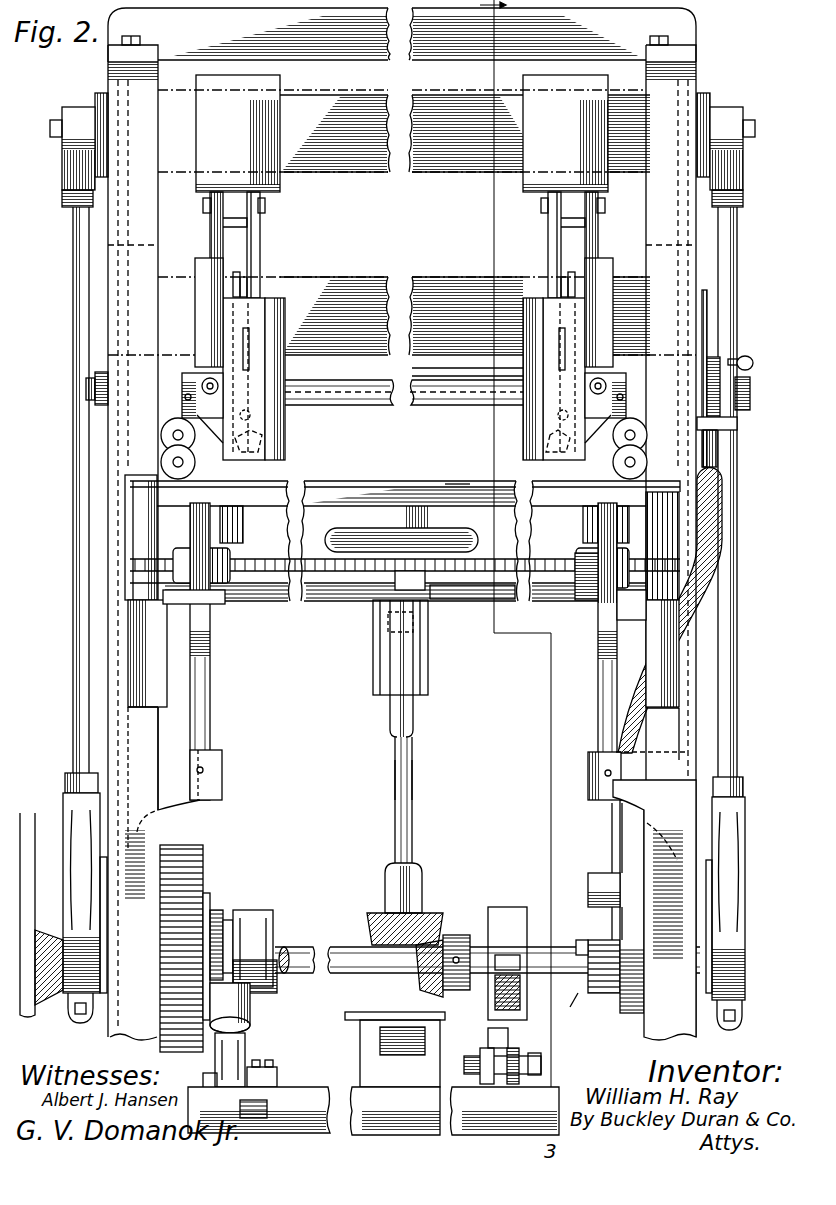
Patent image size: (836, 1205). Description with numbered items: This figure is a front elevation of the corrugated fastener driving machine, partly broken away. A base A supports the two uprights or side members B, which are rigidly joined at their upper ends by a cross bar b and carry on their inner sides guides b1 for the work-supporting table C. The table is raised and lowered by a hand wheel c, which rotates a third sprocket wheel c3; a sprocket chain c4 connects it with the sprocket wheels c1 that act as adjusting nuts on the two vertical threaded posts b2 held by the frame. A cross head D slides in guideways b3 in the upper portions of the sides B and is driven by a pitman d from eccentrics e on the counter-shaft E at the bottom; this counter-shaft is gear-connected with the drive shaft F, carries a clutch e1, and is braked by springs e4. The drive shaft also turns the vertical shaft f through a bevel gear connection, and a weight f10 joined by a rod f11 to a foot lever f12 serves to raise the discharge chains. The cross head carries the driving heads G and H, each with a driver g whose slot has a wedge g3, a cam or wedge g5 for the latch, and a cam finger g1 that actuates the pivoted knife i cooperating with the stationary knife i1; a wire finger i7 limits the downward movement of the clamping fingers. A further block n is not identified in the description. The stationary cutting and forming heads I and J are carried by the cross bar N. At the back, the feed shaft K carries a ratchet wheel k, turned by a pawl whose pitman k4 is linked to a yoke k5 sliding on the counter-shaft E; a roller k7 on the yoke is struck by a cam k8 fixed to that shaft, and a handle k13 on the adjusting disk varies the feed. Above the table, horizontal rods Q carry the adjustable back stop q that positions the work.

The cross bar b is at (633, 24).
The guideways b3 is at (402, 541).
The pitman d is at (75, 728).
The eccentrics e is at (88, 935).
The driving head G is at (265, 122).
The block n is at (550, 105).
The cross head D is at (373, 157).
The cross bar N is at (372, 290).
The cam finger g1 is at (212, 240).
The driver g is at (292, 240).
The wire finger i7 is at (240, 278).
The cam or wedge g5 is at (247, 288).
The forming and cutting head I is at (263, 378).
The cam portion or wedge g3 is at (247, 323).
The stationary knife i1 is at (285, 428).
The pivoted knife i is at (404, 420).
The feed shaft K is at (456, 393).
The cutting and forming head J is at (523, 372).
The rods Q is at (176, 462).
The table C is at (362, 497).
The back stop or abutment q is at (463, 463).
The hand wheel c is at (345, 537).
The sprocket wheels c1 is at (207, 552).
The sprocket chain c4 is at (518, 576).
The third sprocket wheel c3 is at (392, 578).
The springs e4 is at (492, 998).
The weight f10 is at (422, 677).
The vertical shaft f is at (410, 825).
The rod f11 is at (403, 780).
The drive shaft F is at (343, 948).
The foot lever f12 is at (358, 1012).
The clutch e1 is at (253, 925).
The base A is at (303, 1105).
The driving head H is at (545, 1103).
The cam k8 is at (607, 928).
The yoke k5 is at (632, 943).
The roller or projection k7 is at (603, 876).
The ratchet wheel k is at (716, 360).
The handle k13 is at (752, 358).
The pitman k4 is at (713, 535).
The vertical screws or threaded posts b2 is at (210, 738).
The guides b1 is at (150, 672).
The uprights or side members B is at (140, 728).
The counter-shaft E is at (568, 1014).